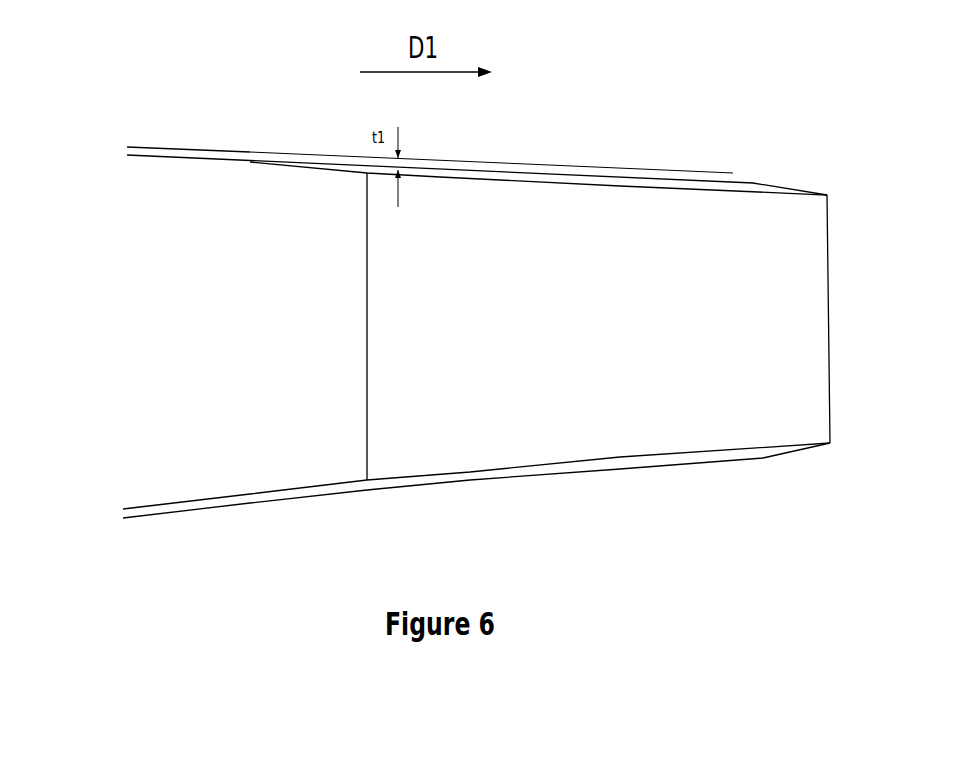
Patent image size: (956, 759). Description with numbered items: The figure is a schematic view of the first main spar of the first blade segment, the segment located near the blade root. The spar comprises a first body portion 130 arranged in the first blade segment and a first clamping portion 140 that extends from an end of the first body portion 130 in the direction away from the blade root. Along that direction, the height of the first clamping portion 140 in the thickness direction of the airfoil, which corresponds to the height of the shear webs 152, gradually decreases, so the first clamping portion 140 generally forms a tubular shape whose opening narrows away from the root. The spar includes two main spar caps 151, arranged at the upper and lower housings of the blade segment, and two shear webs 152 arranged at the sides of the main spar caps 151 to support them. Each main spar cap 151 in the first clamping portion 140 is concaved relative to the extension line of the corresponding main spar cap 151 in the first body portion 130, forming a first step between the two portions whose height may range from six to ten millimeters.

The first body portion 130 is at (217, 243).
The first clamping portion 140 is at (655, 212).
The main spar cap 151 is at (216, 150).
The shear web 152 is at (470, 435).